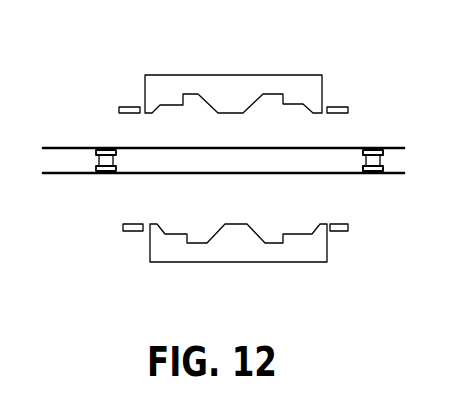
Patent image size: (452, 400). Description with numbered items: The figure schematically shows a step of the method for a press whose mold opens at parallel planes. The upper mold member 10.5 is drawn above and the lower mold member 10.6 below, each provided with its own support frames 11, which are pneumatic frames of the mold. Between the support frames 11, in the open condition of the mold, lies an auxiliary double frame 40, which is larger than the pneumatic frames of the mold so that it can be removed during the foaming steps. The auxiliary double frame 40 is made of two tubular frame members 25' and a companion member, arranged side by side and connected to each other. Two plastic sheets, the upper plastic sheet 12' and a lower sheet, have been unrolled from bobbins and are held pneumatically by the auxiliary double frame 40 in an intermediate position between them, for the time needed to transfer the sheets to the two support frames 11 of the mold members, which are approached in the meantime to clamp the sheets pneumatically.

The upper mold member 10.5 is at (232, 88).
The lower mold member 10.6 is at (211, 253).
The support frames 11 is at (338, 108).
The plastic sheet 12' is at (221, 115).
The auxiliary double frame 40 is at (370, 137).
The tubular frame member 25' is at (403, 126).